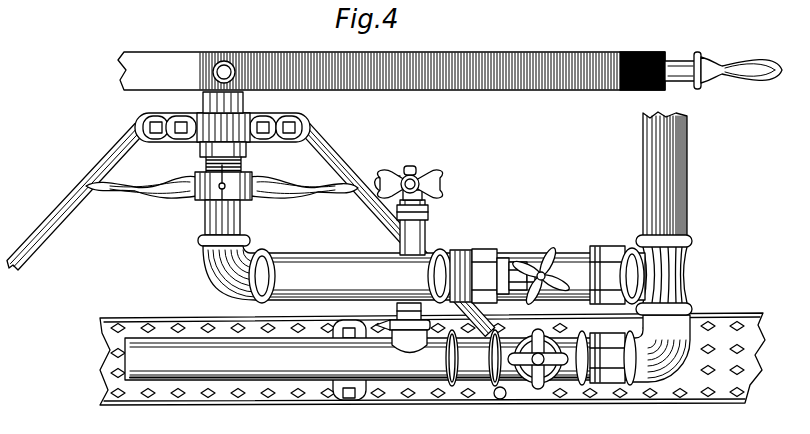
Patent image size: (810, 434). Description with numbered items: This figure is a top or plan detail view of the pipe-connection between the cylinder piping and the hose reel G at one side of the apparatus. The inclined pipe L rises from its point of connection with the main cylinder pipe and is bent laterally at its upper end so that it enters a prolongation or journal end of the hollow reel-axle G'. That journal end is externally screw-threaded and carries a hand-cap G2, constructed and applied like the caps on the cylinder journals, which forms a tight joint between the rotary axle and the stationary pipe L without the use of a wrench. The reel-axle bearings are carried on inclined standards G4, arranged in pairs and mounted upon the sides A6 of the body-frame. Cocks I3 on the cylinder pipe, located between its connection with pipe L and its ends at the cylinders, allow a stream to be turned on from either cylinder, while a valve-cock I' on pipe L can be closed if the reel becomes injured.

The reel G is at (450, 60).
The hollow axle G' is at (222, 169).
The inclined standards G4 is at (348, 150).
The hand-cap G2 is at (222, 197).
The cocks I3 is at (440, 185).
The valve I' is at (540, 262).
The inclined pipe L is at (424, 269).
The channel plate A6 is at (432, 350).